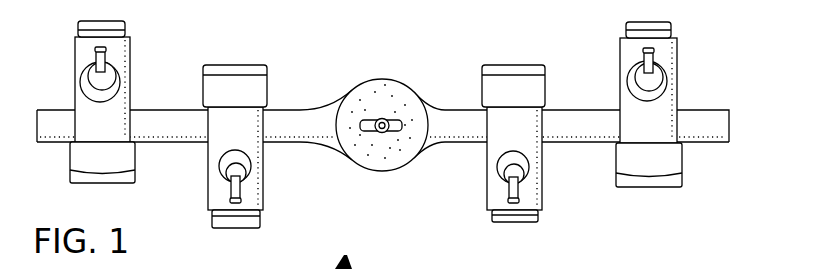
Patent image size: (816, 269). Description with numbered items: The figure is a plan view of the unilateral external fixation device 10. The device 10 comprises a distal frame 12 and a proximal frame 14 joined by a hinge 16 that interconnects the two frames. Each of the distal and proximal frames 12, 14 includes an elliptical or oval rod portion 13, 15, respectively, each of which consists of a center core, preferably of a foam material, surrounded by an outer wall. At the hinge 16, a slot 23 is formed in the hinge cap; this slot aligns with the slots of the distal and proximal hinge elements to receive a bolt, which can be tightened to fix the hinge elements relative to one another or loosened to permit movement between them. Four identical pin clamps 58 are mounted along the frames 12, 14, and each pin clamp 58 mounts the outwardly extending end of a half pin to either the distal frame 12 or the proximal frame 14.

The unilateral external fixation device 10 is at (437, 50).
The distal frame 12 is at (166, 88).
The rod portion 13 is at (167, 142).
The proximal frame 14 is at (581, 97).
The rod portion 15 is at (584, 142).
The hinge 16 is at (396, 48).
The slot 23 is at (368, 129).
The pin clamp 58 is at (134, 42).